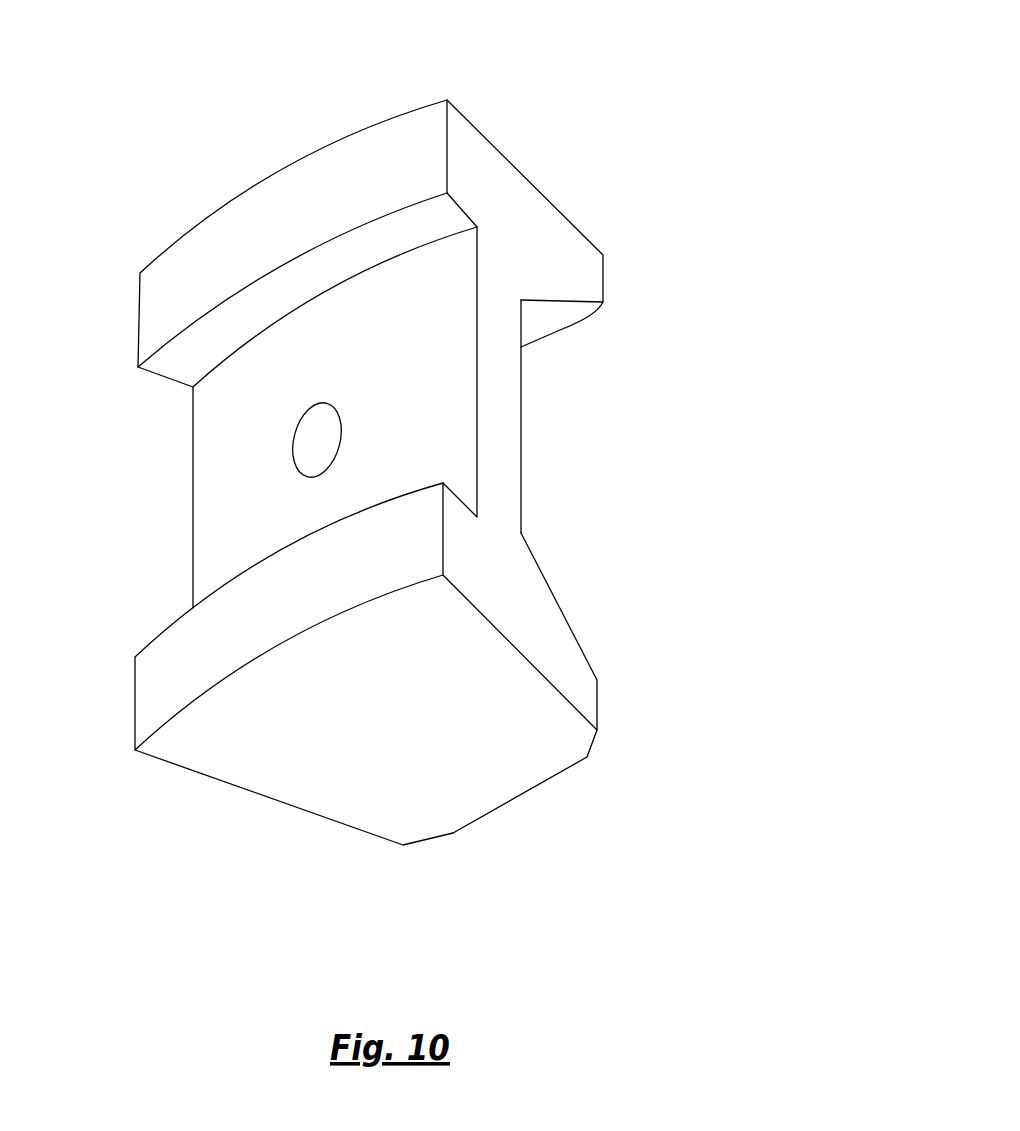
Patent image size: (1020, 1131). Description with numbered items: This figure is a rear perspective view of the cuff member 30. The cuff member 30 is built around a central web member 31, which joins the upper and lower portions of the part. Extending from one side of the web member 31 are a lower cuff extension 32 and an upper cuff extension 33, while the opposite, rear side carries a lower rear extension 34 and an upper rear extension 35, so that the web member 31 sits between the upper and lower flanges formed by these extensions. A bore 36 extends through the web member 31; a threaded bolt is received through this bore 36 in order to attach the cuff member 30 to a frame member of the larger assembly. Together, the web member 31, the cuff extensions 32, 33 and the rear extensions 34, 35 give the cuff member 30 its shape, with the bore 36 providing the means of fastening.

The cuff member 30 is at (513, 167).
The web member 31 is at (348, 417).
The lower cuff extension 32 is at (583, 680).
The upper cuff extension 33 is at (588, 273).
The lower rear extension 34 is at (160, 692).
The upper rear extension 35 is at (215, 248).
The bore 36 is at (296, 447).